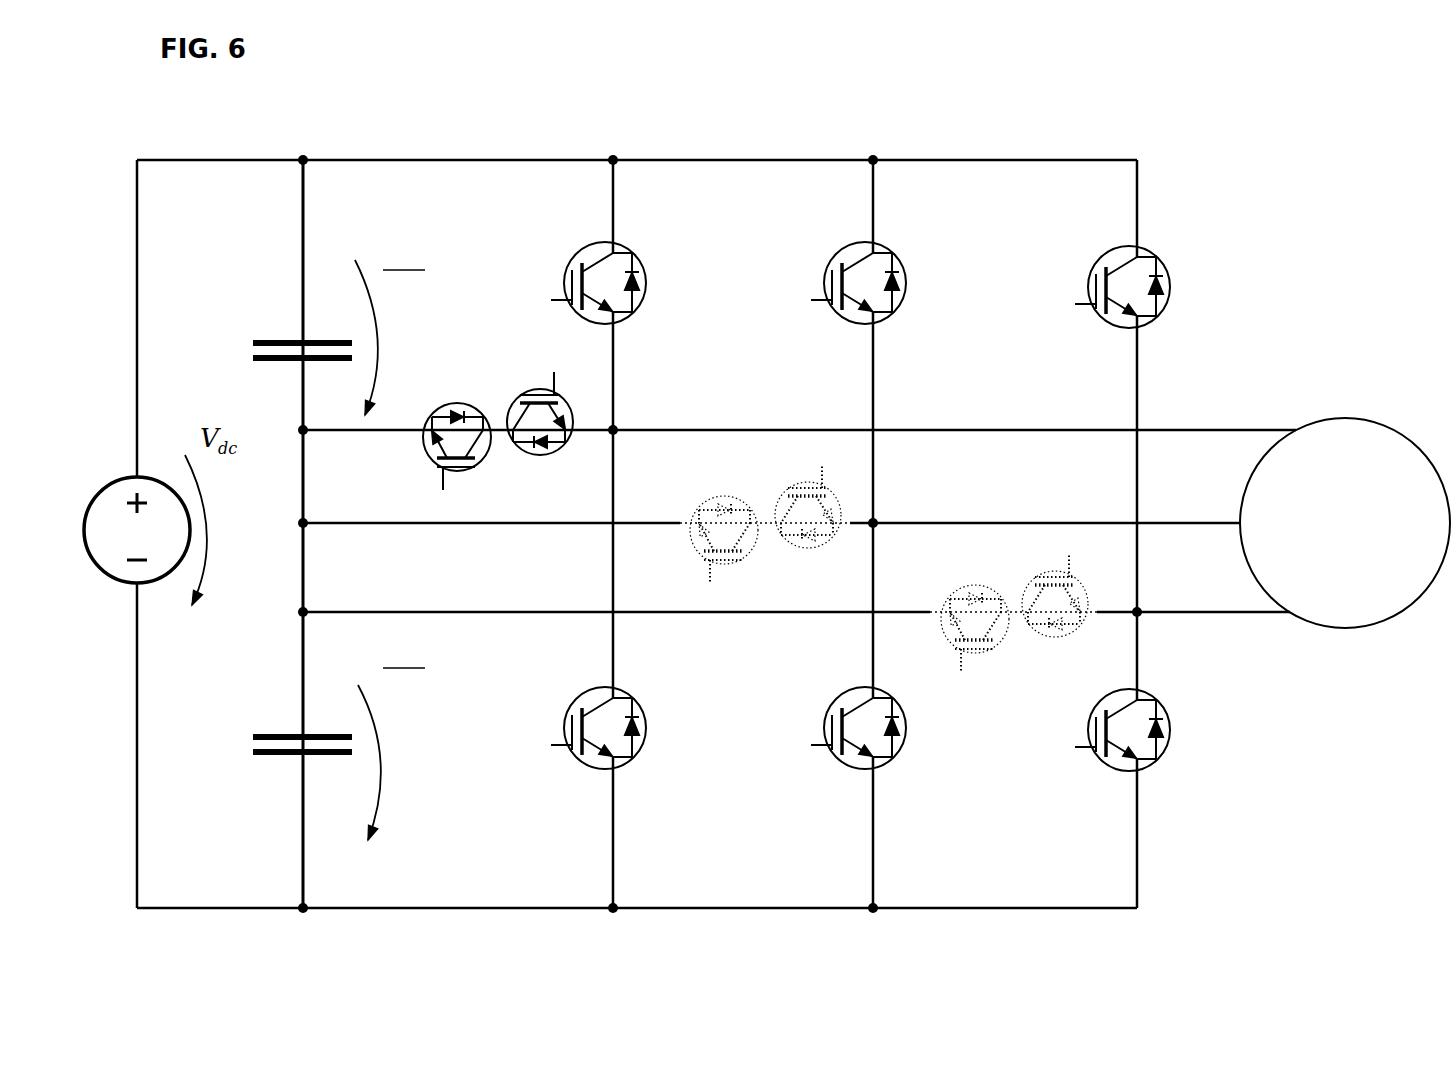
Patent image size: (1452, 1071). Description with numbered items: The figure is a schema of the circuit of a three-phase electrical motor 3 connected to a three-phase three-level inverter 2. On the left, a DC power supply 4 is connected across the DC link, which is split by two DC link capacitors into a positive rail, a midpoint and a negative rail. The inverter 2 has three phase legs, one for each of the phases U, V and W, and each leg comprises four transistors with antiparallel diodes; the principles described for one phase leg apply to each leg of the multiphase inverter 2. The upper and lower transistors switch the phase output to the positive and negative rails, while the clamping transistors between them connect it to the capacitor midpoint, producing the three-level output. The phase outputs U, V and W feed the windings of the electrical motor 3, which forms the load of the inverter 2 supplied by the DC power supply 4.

The inverter 2 is at (697, 122).
The electrical motor 3 is at (1344, 426).
The DC power supply 4 is at (115, 502).